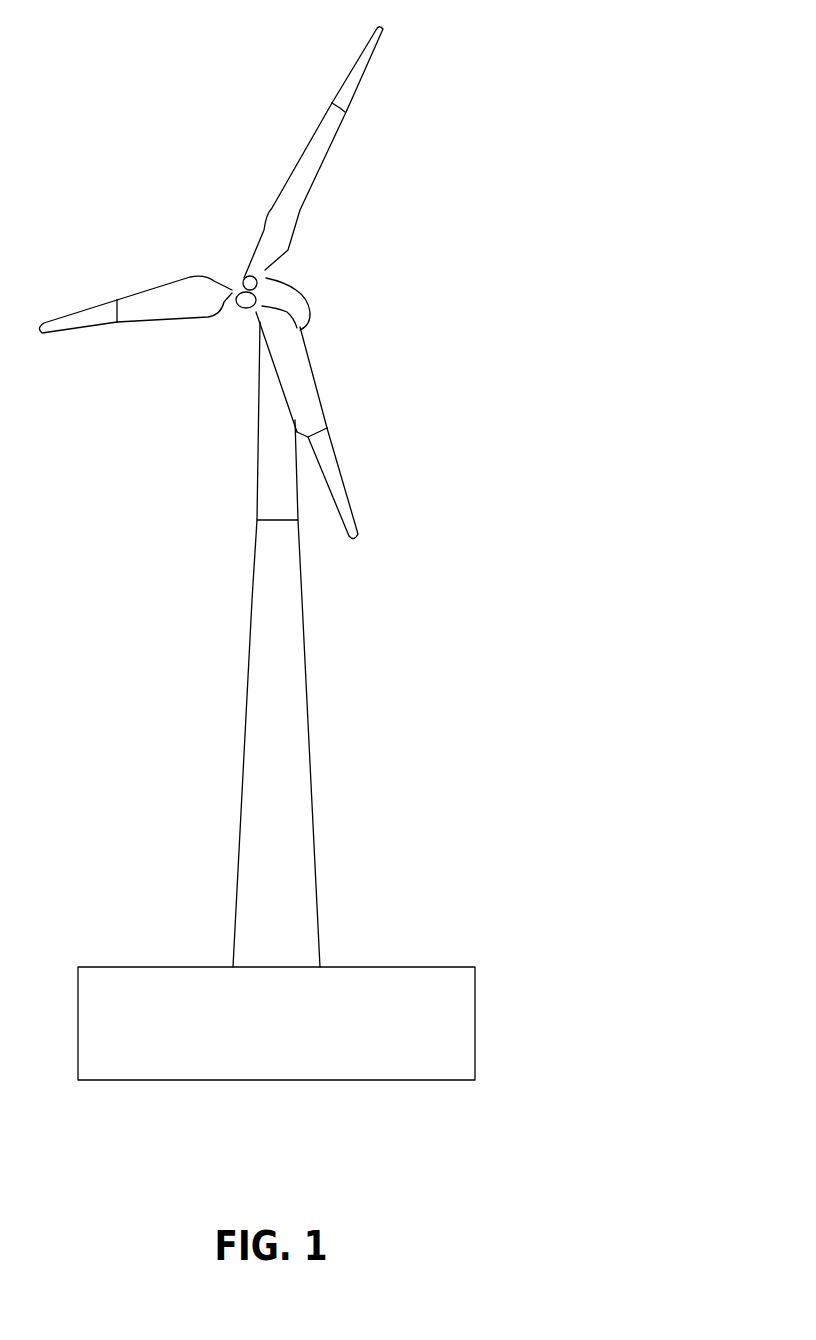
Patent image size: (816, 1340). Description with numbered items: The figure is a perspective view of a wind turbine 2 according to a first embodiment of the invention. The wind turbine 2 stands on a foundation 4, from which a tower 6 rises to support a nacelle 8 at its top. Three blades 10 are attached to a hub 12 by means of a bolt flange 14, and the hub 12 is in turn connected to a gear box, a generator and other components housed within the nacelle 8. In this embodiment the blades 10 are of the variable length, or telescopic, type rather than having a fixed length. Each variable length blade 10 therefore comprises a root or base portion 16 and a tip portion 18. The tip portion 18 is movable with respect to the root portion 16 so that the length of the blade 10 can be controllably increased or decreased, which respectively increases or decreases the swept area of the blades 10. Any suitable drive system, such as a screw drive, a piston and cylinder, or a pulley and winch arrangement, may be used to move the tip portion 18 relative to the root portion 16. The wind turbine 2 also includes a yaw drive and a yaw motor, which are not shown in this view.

The wind turbine 2 is at (150, 433).
The foundation 4 is at (428, 985).
The tower 6 is at (268, 497).
The nacelle 8 is at (303, 290).
The blade 10 is at (231, 280).
The hub 12 is at (243, 278).
The bolt flange 14 is at (238, 282).
The root portion 16 is at (317, 136).
The tip portion 18 is at (364, 72).